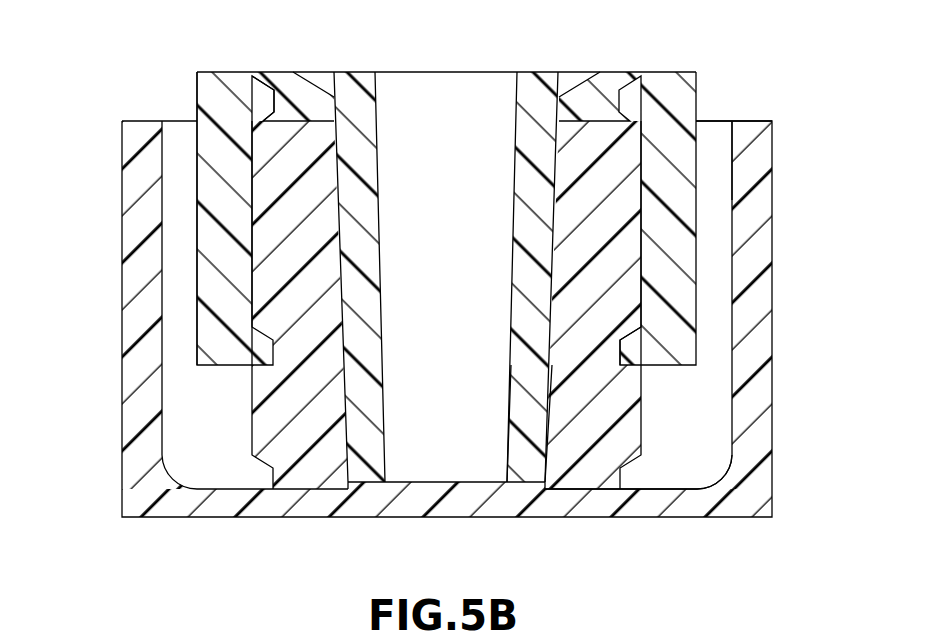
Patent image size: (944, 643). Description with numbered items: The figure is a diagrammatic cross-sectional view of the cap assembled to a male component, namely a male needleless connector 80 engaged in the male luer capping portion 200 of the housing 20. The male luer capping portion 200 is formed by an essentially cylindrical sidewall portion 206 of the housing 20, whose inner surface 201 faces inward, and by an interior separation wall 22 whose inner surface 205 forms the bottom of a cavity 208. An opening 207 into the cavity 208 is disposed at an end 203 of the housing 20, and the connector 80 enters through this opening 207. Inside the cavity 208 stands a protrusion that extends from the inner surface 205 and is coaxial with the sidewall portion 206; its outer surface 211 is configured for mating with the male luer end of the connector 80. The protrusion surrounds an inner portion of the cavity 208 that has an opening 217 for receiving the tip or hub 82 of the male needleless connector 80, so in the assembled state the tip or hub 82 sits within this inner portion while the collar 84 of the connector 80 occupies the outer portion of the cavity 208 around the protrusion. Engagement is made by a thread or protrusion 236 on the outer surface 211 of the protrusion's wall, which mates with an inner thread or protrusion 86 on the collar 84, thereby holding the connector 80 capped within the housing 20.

The housing 20 is at (448, 324).
The wall 22 is at (372, 496).
The male needleless connector 80 is at (547, 70).
The tip or hub 82 is at (520, 450).
The collar 84 is at (230, 218).
The inner thread or protrusion 86 is at (630, 228).
The male luer capping portion 200 is at (83, 81).
The inner surface 201 is at (170, 152).
The end 203 is at (708, 116).
The inner surface 205 is at (692, 490).
The sidewall portion 206 is at (753, 386).
The opening 207 is at (713, 133).
The cavity 208 is at (177, 300).
The outer surface 211 is at (252, 140).
The opening 217 is at (332, 168).
The thread or protrusion 236 is at (622, 147).